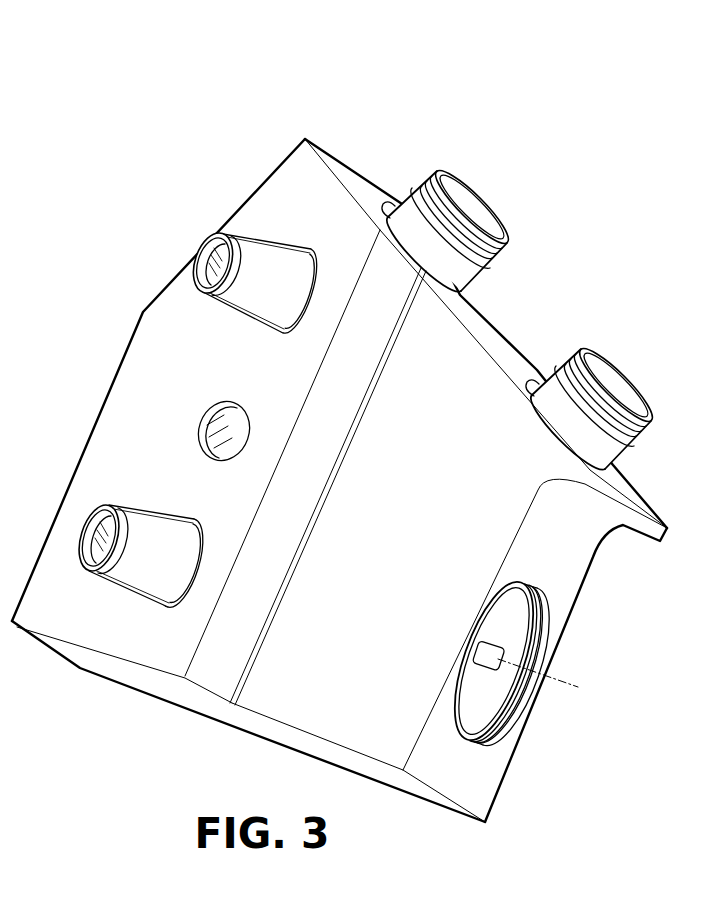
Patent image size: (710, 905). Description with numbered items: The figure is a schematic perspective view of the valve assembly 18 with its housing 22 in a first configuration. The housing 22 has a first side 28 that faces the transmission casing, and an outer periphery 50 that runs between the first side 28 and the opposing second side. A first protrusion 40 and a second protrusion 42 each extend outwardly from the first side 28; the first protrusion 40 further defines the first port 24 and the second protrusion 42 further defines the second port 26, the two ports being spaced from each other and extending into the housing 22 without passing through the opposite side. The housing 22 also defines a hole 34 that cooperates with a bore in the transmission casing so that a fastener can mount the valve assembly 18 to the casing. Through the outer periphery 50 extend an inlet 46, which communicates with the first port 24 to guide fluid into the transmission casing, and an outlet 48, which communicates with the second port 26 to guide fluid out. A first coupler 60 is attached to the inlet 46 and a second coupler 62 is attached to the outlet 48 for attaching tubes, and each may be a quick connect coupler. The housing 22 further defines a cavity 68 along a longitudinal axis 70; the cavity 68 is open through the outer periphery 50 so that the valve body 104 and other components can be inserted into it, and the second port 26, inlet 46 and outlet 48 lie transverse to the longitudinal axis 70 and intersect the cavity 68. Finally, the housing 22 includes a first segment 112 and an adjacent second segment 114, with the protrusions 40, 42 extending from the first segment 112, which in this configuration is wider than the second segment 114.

The valve assembly 18 is at (546, 176).
The housing 22 is at (333, 154).
The first port 24 is at (200, 252).
The second port 26 is at (97, 537).
The first side 28 is at (182, 657).
The hole 34 is at (207, 425).
The first protrusion 40 is at (242, 297).
The second protrusion 42 is at (143, 532).
The inlet 46 is at (473, 297).
The outlet 48 is at (613, 468).
The outer periphery 50 is at (508, 347).
The first coupler 60 is at (416, 186).
The second coupler 62 is at (633, 441).
The cavity 68 is at (507, 710).
The longitudinal axis 70 is at (568, 680).
The valve body 104 is at (497, 613).
The first segment 112 is at (137, 355).
The second segment 114 is at (397, 742).